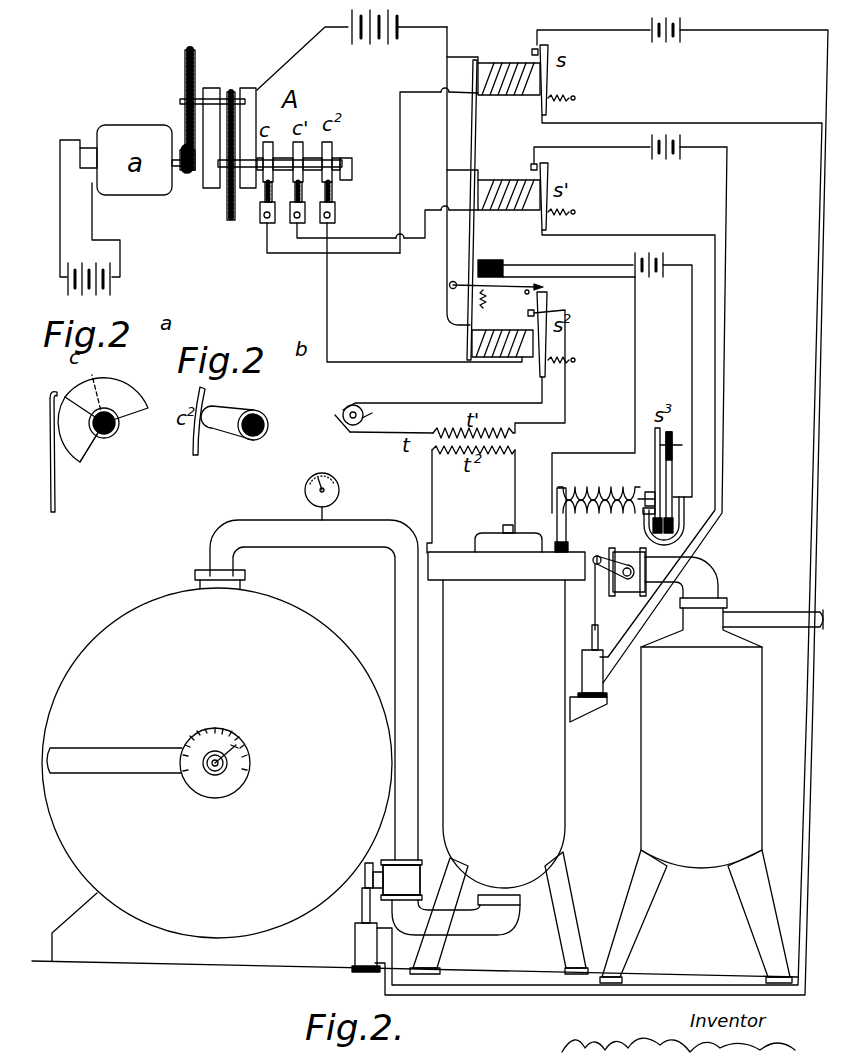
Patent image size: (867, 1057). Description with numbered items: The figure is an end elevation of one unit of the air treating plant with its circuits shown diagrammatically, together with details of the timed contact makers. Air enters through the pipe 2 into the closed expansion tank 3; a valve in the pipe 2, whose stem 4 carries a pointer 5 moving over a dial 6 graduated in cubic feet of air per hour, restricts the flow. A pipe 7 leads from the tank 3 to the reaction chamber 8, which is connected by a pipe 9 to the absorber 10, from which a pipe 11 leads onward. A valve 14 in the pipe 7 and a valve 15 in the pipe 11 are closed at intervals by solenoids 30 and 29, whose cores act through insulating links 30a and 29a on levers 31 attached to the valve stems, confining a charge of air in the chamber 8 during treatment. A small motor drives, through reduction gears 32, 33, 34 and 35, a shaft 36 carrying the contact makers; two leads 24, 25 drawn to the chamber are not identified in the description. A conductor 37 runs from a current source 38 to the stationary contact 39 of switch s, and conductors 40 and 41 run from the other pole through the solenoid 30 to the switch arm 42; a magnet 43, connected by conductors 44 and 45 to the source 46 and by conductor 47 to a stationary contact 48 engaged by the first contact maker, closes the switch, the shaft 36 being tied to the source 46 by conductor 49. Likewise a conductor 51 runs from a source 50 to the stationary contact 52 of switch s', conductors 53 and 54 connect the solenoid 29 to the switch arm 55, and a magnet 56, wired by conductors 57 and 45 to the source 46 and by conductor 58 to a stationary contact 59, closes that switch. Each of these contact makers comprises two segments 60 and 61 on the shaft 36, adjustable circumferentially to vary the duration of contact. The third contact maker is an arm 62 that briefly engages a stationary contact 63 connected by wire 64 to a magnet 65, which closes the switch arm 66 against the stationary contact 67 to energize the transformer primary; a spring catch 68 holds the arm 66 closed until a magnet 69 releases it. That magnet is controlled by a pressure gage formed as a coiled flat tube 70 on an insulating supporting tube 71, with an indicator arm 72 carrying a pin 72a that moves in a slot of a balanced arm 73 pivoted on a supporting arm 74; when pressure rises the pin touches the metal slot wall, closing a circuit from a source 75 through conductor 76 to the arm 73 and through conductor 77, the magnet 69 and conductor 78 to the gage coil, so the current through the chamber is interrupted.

In FIG. 2, the pipe 2 is at (100, 748).
In FIG. 2, the expansion tank 3 is at (217, 765).
In FIG. 2, the valve stem 4 is at (222, 780).
In FIG. 2, the pointer 5 is at (240, 752).
In FIG. 2, the dial 6 is at (227, 766).
In FIG. 2, the pipe 7 is at (395, 603).
In FIG. 2, the reaction chamber 8 is at (499, 749).
In FIG. 2, the pipe 9 is at (700, 576).
In FIG. 2, the absorber 10 is at (696, 815).
In FIG. 2, the pipe 11 is at (790, 626).
In FIG. 2, the valve 14 is at (413, 878).
In FIG. 2, the valve 15 is at (633, 592).
In FIG. 2, the wire 24 is at (514, 500).
In FIG. 2, the wire 25 is at (428, 495).
In FIG. 2, the solenoid 29 is at (598, 682).
In FIG. 2, the link 29a is at (590, 605).
In FIG. 2, the solenoid 30 is at (354, 940).
In FIG. 2, the link 30a is at (360, 877).
In FIG. 2, the lever 31 is at (600, 556).
In FIG. 2, the reduction gear 32 is at (188, 172).
In FIG. 2, the reduction gear 33 is at (185, 73).
In FIG. 2, the reduction gear 34 is at (232, 92).
In FIG. 2, the reduction gear 35 is at (230, 215).
In FIG. 2, the shaft 36 is at (345, 160).
In FIG. 2A, the shaft 36 is at (112, 432).
In FIG. 2B, the shaft 36 is at (270, 428).
In FIG. 2, the conductor 37 is at (594, 30).
In FIG. 2, the current source 38 is at (666, 44).
In FIG. 2, the stationary contact 39 is at (532, 51).
In FIG. 2, the conductor 40 is at (765, 35).
In FIG. 2, the conductor 41 is at (599, 550).
In FIG. 2, the switch arm 42 is at (553, 91).
In FIG. 2, the magnet 43 is at (508, 65).
In FIG. 2, the conductor 44 is at (462, 57).
In FIG. 2, the conductor 45 is at (412, 27).
In FIG. 2, the current source 46 is at (374, 42).
In FIG. 2, the conductor 47 is at (401, 172).
In FIG. 2, the stationary contact member 48 is at (262, 223).
In FIG. 2A, the stationary contact member 48 is at (56, 500).
In FIG. 2, the conductor 49 is at (300, 50).
In FIG. 2, the current source 50 is at (666, 159).
In FIG. 2, the conductor 51 is at (612, 148).
In FIG. 2, the stationary contact 52 is at (531, 167).
In FIG. 2, the conductor 53 is at (728, 212).
In FIG. 2, the conductor 54 is at (705, 235).
In FIG. 2, the switch arm 55 is at (548, 178).
In FIG. 2, the magnet 56 is at (508, 181).
In FIG. 2, the conductor 57 is at (462, 170).
In FIG. 2, the conductor 58 is at (424, 242).
In FIG. 2, the stationary contact 59 is at (297, 223).
In FIG. 2A, the segment 60 is at (135, 392).
In FIG. 2A, the segment 61 is at (82, 452).
In FIG. 2, the contact arm 62 is at (333, 192).
In FIG. 2B, the contact arm 62 is at (234, 410).
In FIG. 2, the stationary contact 63 is at (336, 215).
In FIG. 2B, the stationary contact 63 is at (199, 456).
In FIG. 2, the wire 64 is at (400, 362).
In FIG. 2, the magnet 65 is at (496, 332).
In FIG. 2, the switch arm 66 is at (552, 299).
In FIG. 2, the stationary contact 67 is at (528, 311).
In FIG. 2, the spring catch 68 is at (494, 298).
In FIG. 2, the magnet 69 is at (492, 260).
In FIG. 2, the coiled flat tube 70 is at (586, 487).
In FIG. 2, the supporting tube 71 is at (557, 525).
In FIG. 2, the indicator arm 72 is at (655, 470).
In FIG. 2, the pin 72a is at (682, 445).
In FIG. 2, the balanced arm 73 is at (672, 470).
In FIG. 2, the supporting arm 74 is at (690, 512).
In FIG. 2, the current source 75 is at (652, 273).
In FIG. 2, the conductor 76 is at (692, 357).
In FIG. 2, the conductor 77 is at (590, 258).
In FIG. 2, the conductor 78 is at (634, 378).